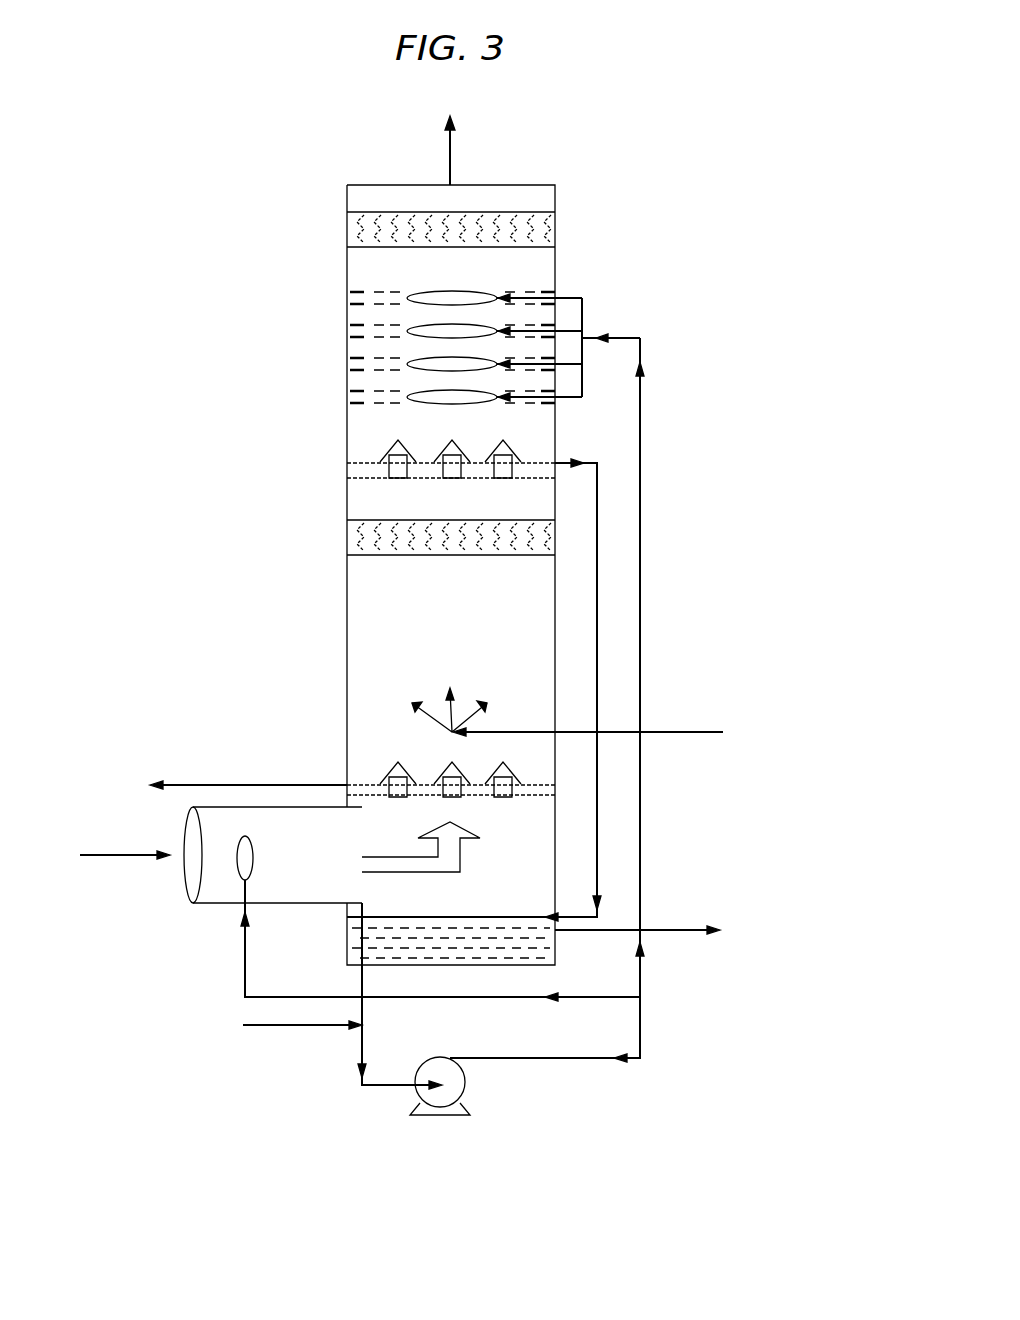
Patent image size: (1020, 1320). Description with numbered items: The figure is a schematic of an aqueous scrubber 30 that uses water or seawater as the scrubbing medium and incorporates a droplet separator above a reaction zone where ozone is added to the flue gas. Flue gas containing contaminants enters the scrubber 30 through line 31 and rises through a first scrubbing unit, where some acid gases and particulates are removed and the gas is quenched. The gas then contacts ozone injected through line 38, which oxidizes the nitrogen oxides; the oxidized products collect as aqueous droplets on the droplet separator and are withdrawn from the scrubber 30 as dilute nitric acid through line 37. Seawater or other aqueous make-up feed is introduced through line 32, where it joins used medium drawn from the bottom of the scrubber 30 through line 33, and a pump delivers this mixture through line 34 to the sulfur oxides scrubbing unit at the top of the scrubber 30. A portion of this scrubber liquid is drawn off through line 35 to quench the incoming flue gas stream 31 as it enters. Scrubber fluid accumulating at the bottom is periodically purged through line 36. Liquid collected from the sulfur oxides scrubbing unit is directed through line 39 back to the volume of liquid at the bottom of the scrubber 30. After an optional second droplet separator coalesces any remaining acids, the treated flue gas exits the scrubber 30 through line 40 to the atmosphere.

The scrubber 30 is at (345, 440).
The line 31 is at (115, 853).
The line 32 is at (268, 1023).
The line 33 is at (358, 1048).
The line 34 is at (642, 1033).
The line 35 is at (583, 999).
The line 36 is at (680, 934).
The line 37 is at (187, 783).
The line 38 is at (683, 736).
The line 39 is at (603, 478).
The line 40 is at (458, 168).